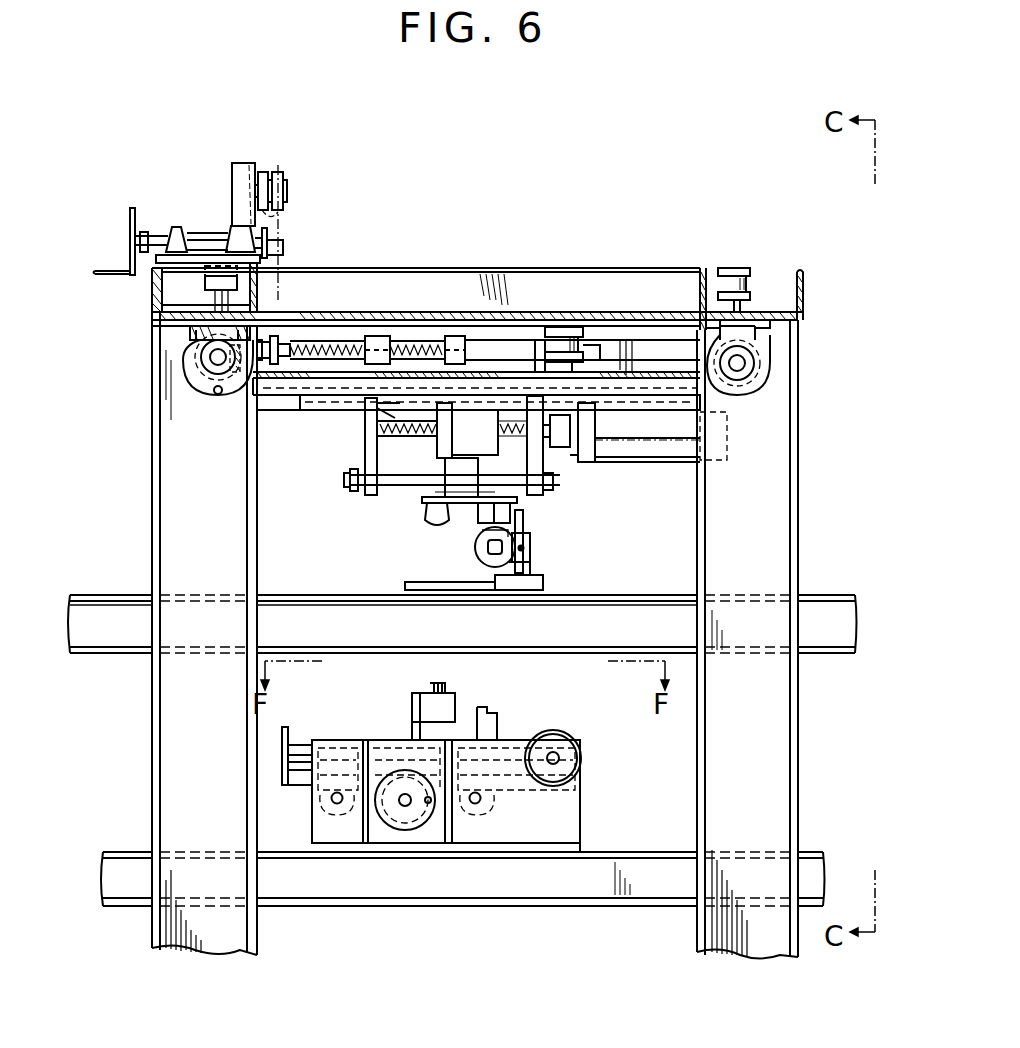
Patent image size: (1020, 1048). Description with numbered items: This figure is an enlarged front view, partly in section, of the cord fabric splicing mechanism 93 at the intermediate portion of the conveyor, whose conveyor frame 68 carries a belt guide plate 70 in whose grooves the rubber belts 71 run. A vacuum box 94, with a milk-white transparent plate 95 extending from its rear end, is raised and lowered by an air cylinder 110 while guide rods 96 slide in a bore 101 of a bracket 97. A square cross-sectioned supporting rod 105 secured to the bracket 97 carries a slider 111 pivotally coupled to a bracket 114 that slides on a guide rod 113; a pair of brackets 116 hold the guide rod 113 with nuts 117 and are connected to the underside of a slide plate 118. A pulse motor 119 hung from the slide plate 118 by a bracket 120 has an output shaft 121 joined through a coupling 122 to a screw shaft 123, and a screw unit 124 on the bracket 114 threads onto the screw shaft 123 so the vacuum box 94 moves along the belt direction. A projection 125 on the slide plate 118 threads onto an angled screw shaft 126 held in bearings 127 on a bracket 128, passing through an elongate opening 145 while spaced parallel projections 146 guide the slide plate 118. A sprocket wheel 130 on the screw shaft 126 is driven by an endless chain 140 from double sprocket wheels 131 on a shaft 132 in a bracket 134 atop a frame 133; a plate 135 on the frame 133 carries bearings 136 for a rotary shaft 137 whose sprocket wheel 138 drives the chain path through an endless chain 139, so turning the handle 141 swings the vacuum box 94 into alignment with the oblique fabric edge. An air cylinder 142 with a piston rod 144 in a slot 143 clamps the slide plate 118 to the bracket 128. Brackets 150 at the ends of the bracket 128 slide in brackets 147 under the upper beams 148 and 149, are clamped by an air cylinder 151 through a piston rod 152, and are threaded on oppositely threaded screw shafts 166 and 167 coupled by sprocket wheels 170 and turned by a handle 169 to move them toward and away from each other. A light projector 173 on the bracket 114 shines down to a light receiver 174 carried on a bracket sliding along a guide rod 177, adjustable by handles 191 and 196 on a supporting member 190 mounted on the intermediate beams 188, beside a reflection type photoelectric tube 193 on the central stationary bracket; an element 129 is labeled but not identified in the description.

The conveyor frame 68 is at (112, 640).
The belt guide plate 70 is at (140, 598).
The rubber belts 71 is at (92, 596).
The cord fabric splicing mechanism 93 is at (486, 262).
The vacuum boxes 94 is at (545, 584).
The milk-white transparent plate 95 is at (412, 582).
The guide rods 96 is at (524, 530).
The bracket 97 is at (532, 568).
The bore 101 is at (532, 550).
The square cross-sectioned supporting rod 105 is at (490, 557).
The air cylinder 110 is at (512, 512).
The sliders 111 is at (476, 550).
The guide rod 113 is at (365, 472).
The bracket 114 is at (425, 504).
The brackets 116 is at (365, 446).
The nuts 117 is at (344, 480).
The slide plates 118 is at (507, 395).
The pulse motor 119 is at (668, 464).
The bracket 120 is at (585, 464).
The output shaft 121 is at (575, 415).
The coupling 122 is at (543, 455).
The screw shaft 123 is at (385, 420).
The screw unit 124 is at (452, 450).
The projection 125 is at (376, 336).
The screw shafts 126 is at (364, 344).
The bearings 127 is at (452, 336).
The bracket 128 is at (680, 310).
The hatched plate 129 is at (628, 345).
The sprocket wheel 130 is at (280, 366).
The double sprocket wheels 131 is at (280, 176).
The shaft 132 is at (286, 190).
The frame 133 is at (152, 486).
The bracket 134 is at (246, 170).
The plate 135 is at (155, 286).
The bearings 136 is at (176, 228).
The rotary shaft 137 is at (208, 236).
The sprocket wheel 138 is at (285, 240).
The endless chain 139 is at (280, 222).
The endless chain 140 is at (280, 280).
The handle 141 is at (128, 218).
The air cylinder 142 is at (562, 327).
The slot 143 is at (525, 372).
The piston rod 144 is at (580, 365).
The elongate opening 145 is at (355, 400).
The spaced parallel projections 146 is at (312, 410).
The brackets 147 is at (780, 329).
The upper beam 148 is at (160, 318).
The upper beam 149 is at (803, 290).
The brackets 150 is at (200, 343).
The air cylinder 151 is at (732, 266).
The piston rod 152 is at (752, 312).
The screw shaft 166 is at (210, 372).
The screw shaft 167 is at (740, 373).
The handle 169 is at (218, 395).
The sprocket wheels 170 is at (230, 374).
The light projectors 173 is at (432, 530).
The light receivers 174 is at (437, 688).
The guide rod 177 is at (294, 745).
The intermediate beams 188 is at (585, 906).
The supporting member 190 is at (575, 817).
The handle 191 is at (555, 738).
The reflection type photoelectric tube 193 is at (490, 720).
The handle 196 is at (430, 822).